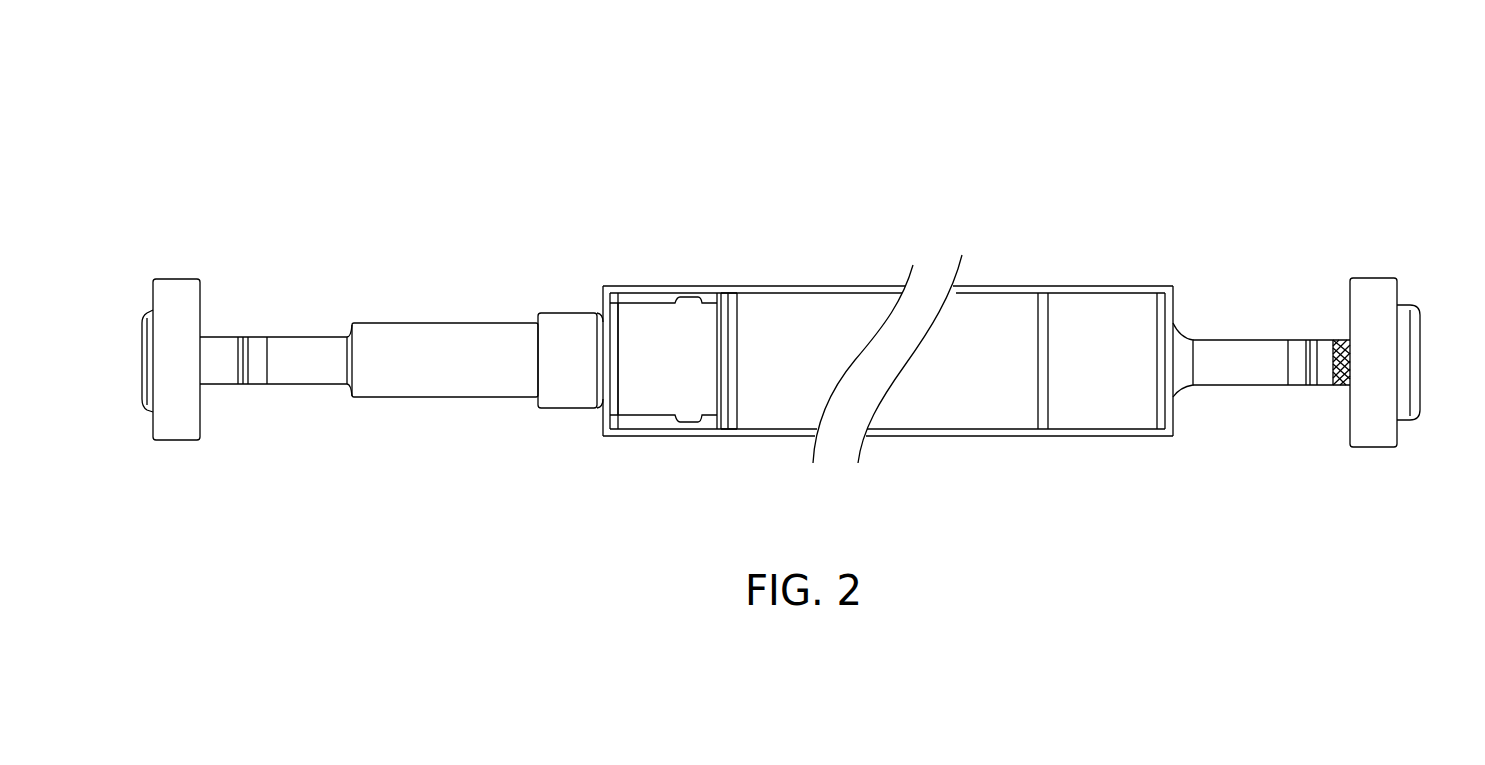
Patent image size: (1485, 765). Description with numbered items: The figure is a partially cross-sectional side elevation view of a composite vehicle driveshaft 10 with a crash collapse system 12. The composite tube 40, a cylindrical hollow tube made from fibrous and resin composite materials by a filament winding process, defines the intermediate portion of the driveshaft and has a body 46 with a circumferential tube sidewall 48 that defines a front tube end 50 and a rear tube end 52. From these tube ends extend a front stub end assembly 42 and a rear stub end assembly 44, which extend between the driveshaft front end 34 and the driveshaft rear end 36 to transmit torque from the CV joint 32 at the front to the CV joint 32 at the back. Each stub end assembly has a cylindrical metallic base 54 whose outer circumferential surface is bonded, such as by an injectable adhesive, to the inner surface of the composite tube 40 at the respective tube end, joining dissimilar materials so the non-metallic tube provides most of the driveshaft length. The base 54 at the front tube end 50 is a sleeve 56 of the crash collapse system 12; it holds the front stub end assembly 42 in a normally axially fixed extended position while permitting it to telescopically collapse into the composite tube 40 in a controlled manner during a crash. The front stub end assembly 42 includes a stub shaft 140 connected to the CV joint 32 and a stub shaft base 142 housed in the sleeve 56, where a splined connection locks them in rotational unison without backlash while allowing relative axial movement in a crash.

The composite vehicle driveshaft 10 is at (865, 88).
The crash collapse system 12 is at (611, 178).
The CV joint 32 is at (213, 257).
The driveshaft front end 34 is at (257, 448).
The driveshaft rear end 36 is at (1210, 490).
The composite tube 40 is at (826, 203).
The front stub end assembly 42 is at (380, 253).
The rear stub end assembly 44 is at (1268, 202).
The body 46 is at (871, 226).
The circumferential tube sidewall 48 is at (884, 280).
The front tube end 50 is at (687, 265).
The rear tube end 52 is at (1089, 262).
The base 54 is at (688, 432).
The sleeve 56 is at (637, 287).
The stub shaft 140 is at (417, 407).
The stub shaft base 142 is at (632, 396).